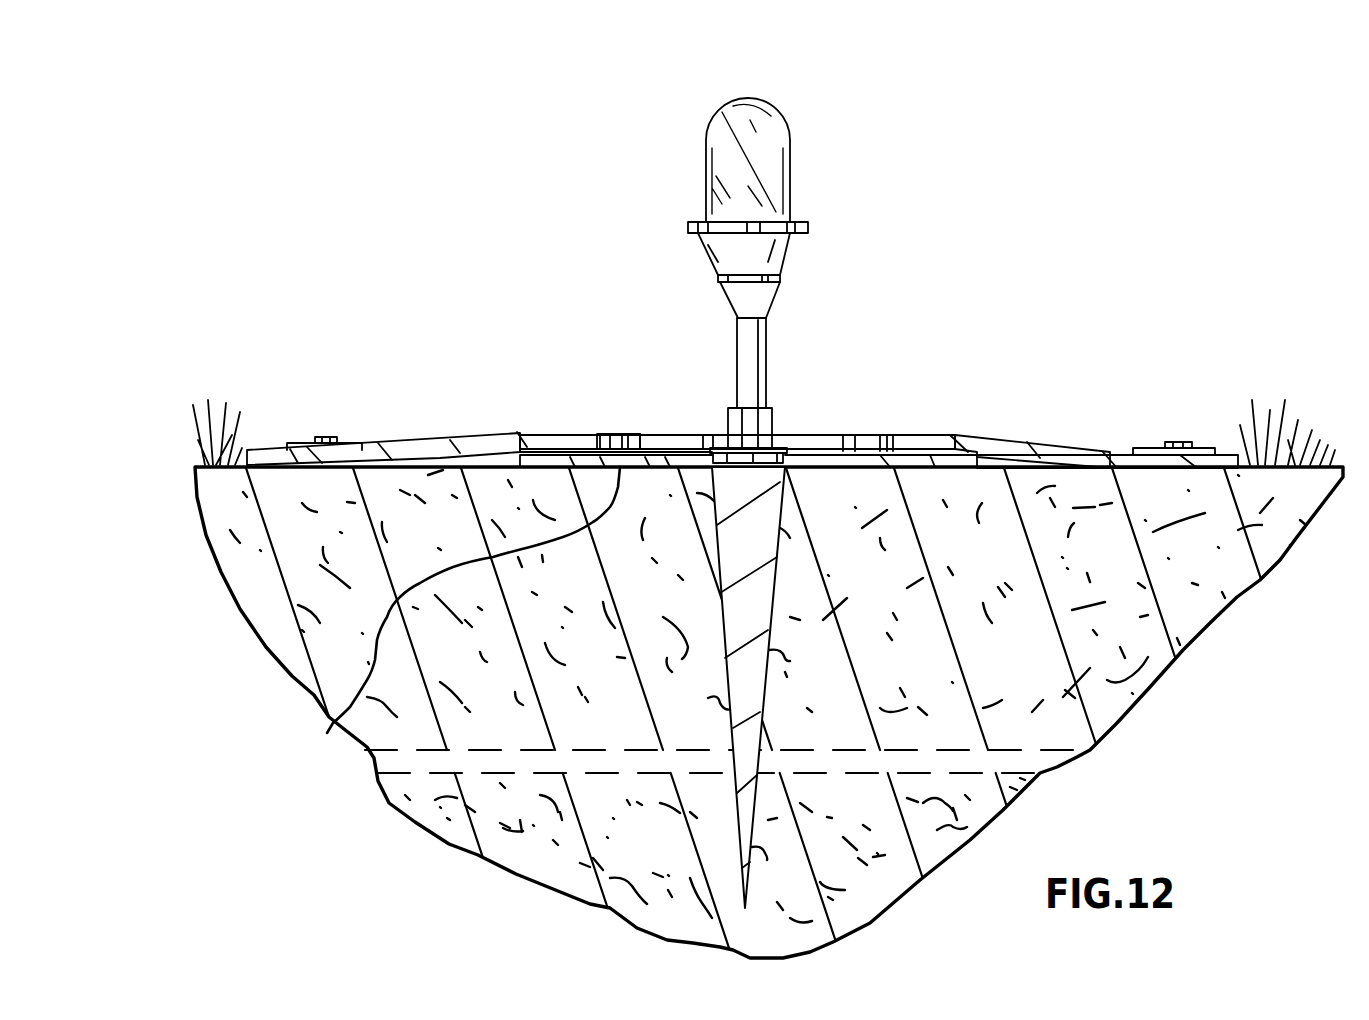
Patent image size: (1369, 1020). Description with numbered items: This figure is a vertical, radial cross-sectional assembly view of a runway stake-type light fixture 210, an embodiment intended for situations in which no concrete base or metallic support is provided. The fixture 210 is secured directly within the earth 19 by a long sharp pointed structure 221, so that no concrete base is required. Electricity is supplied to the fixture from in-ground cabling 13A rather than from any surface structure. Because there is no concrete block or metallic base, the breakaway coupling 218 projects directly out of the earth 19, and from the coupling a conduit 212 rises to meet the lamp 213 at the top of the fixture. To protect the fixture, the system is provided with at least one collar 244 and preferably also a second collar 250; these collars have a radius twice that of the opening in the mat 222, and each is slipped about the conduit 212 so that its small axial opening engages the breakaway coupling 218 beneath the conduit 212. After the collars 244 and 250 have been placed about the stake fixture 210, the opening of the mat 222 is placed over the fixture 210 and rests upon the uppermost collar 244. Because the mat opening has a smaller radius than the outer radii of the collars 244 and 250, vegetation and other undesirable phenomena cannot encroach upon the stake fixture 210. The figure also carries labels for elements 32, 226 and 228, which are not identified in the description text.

The lamp 213 is at (785, 128).
The runway stake-type light fixture 210 is at (805, 182).
The conduit 212 is at (755, 344).
The breakaway coupling 218 is at (773, 419).
The fastener 32 is at (338, 438).
The plate 226 is at (577, 433).
The collar 244 is at (620, 433).
The mat 222 is at (879, 412).
The cover plate 228 is at (1095, 447).
The second collar 250 is at (330, 726).
The in-ground cabling 13A is at (512, 773).
The earth 19 is at (1185, 615).
The long sharp pointed structure 221 is at (750, 694).